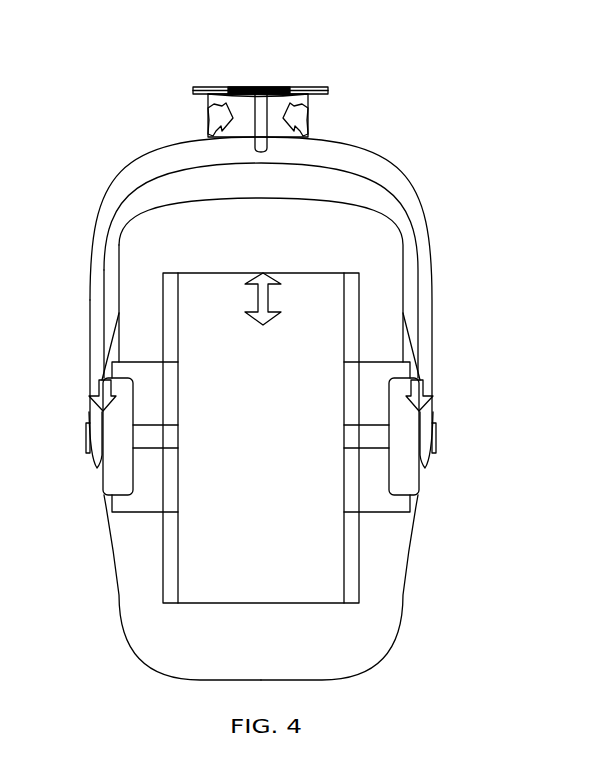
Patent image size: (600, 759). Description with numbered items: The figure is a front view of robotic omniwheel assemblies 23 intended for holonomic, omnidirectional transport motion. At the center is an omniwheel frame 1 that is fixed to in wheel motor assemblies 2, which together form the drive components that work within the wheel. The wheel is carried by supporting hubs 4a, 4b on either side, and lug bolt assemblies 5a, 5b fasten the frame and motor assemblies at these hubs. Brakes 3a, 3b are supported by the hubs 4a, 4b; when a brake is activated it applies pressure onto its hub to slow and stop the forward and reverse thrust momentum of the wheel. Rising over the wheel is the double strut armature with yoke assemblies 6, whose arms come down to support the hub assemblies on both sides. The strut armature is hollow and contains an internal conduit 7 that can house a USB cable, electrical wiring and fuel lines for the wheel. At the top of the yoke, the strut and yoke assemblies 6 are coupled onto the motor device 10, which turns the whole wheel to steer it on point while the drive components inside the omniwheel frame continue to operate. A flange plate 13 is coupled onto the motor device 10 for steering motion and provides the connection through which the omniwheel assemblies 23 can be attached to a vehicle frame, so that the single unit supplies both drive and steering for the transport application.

The omniwheel frame 1 is at (261, 413).
The in wheel motor assemblies 2 is at (259, 273).
The brake 3a is at (101, 395).
The brake 3b is at (421, 395).
The hub 4a is at (108, 524).
The hub 4b is at (414, 524).
The lug bolt assembly 5a is at (86, 441).
The lug bolt assembly 5b is at (436, 441).
The double strut armature with yoke assemblies 6 is at (130, 168).
The internal conduit 7 is at (273, 88).
The motor device 10 is at (208, 124).
The flange plate 13 is at (330, 91).
The robotic omniwheel assemblies 23 is at (243, 99).